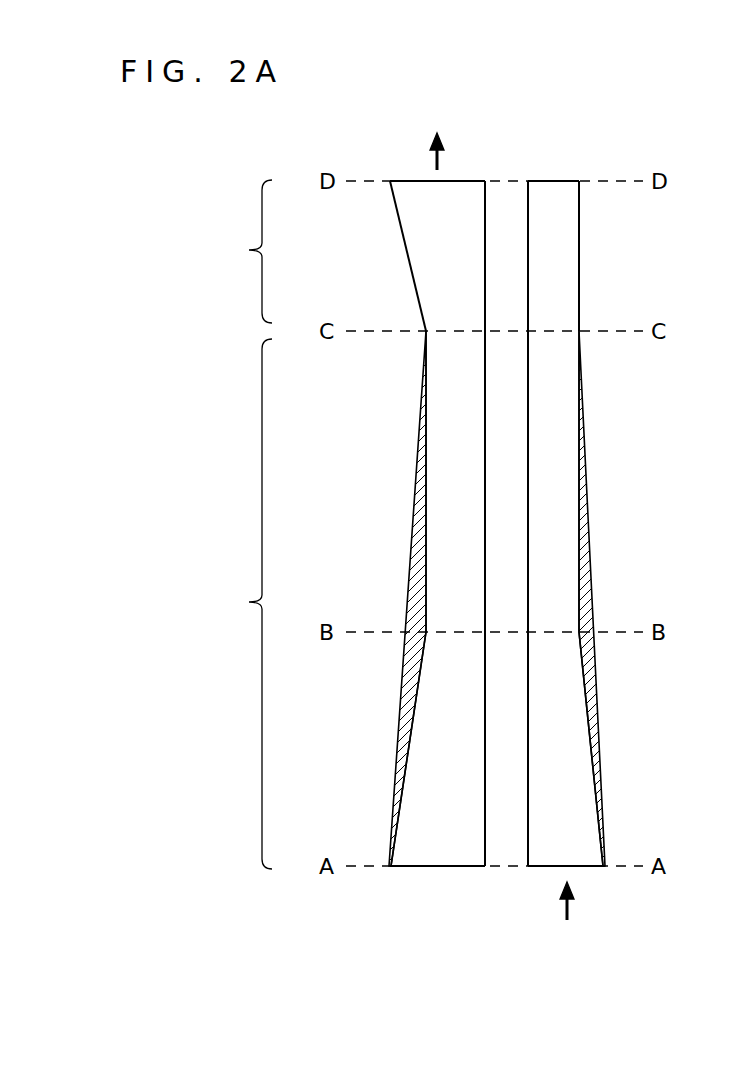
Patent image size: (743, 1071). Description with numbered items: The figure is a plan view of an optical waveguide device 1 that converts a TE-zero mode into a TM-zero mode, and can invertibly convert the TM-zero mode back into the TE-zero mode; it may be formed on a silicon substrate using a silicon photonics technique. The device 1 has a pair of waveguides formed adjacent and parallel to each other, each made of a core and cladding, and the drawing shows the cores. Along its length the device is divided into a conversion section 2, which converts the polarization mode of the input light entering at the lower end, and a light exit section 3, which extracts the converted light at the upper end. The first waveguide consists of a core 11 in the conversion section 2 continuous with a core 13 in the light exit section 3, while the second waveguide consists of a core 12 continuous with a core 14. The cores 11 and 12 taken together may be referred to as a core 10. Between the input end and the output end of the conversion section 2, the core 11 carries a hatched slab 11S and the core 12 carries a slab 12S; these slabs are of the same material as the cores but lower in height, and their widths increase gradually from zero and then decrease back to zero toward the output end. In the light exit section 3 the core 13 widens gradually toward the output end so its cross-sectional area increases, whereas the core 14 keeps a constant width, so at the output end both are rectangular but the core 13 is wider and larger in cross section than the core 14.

The optical waveguide device 1 is at (658, 139).
The conversion section 2 is at (195, 604).
The light exit section 3 is at (195, 256).
The core 10 is at (528, 926).
The core 11 is at (457, 850).
The core 12 is at (548, 858).
The slab 11S is at (413, 524).
The slab 12S is at (588, 548).
The core 13 is at (420, 258).
The core 14 is at (567, 268).